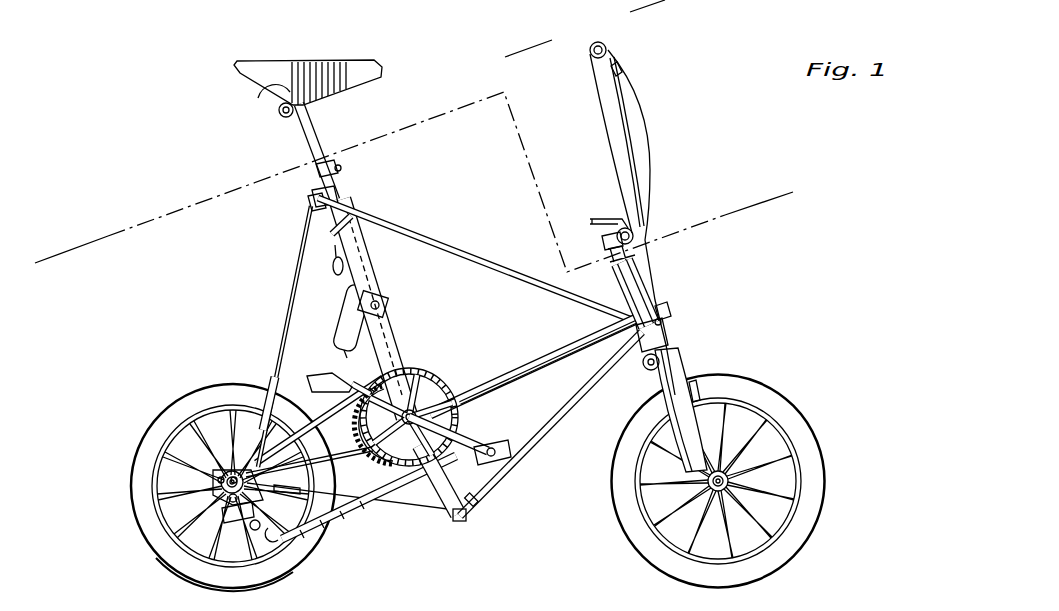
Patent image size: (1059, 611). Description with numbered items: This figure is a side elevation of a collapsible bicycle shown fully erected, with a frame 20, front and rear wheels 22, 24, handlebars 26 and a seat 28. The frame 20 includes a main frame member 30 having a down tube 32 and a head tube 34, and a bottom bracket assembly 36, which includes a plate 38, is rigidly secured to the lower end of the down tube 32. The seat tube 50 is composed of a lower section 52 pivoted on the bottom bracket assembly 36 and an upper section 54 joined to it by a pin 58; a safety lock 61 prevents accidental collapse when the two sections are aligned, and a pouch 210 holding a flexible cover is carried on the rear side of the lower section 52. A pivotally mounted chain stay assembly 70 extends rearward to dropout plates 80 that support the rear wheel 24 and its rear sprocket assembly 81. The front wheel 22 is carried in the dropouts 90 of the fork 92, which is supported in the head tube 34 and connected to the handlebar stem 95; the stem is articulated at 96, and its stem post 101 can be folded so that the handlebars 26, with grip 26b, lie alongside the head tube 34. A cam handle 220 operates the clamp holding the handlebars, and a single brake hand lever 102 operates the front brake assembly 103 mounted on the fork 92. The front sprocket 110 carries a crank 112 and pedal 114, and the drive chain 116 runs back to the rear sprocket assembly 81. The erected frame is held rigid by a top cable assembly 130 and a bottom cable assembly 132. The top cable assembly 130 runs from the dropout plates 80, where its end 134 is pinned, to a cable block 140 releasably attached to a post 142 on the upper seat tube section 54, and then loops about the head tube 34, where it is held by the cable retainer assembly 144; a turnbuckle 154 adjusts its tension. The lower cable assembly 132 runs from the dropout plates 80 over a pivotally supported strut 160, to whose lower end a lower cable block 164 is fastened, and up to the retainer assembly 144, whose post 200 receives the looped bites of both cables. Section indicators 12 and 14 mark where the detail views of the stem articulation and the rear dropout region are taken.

The section line 12- 12 is at (510, 47).
The section line 14- 14 is at (43, 255).
The frame 20 is at (470, 348).
The front wheel 22 is at (780, 400).
The rear wheel 24 is at (290, 558).
The handlebars 26 is at (632, 133).
The handlebar grip 26b is at (597, 42).
The seat 28 is at (352, 58).
The main frame member 30 is at (522, 352).
The down tube 32 is at (566, 358).
The head tube 34 is at (632, 290).
The bottom bracket assembly 36 is at (423, 369).
The plate 38 is at (344, 465).
The seat tube 50 is at (387, 282).
The lower seat tube section 52 is at (392, 326).
The upper seat tube section 54 is at (354, 222).
The pin 58 is at (385, 299).
The safety lock 61 is at (356, 231).
The chain stay assembly 70 is at (349, 500).
The dropout plates 80 is at (192, 414).
The rear sprocket assembly 81 is at (218, 470).
The dropouts 90 is at (643, 535).
The fork 92 is at (650, 372).
The handlebar stem 95 is at (620, 248).
The stem articulation 96 is at (634, 228).
The handlebar stem post 101 is at (616, 148).
The brake hand lever 102 is at (618, 62).
The front brake assembly 103 is at (699, 390).
The front sprocket 110 is at (380, 492).
The crank 112 is at (478, 443).
The pedal 114 is at (352, 374).
The drive chain 116 is at (430, 478).
The top cable assembly 130 is at (494, 262).
The bottom cable assembly 132 is at (553, 432).
The cable end 134 is at (223, 413).
The cable block 140 is at (316, 197).
The post 142 is at (315, 208).
The cable retainer assembly 144 is at (668, 312).
The turnbuckle 154 is at (268, 397).
The strut 160 is at (472, 494).
The lower cable block 164 is at (462, 522).
The post 200 is at (662, 323).
The pouch 210 is at (350, 322).
The cam handle 220 is at (602, 217).